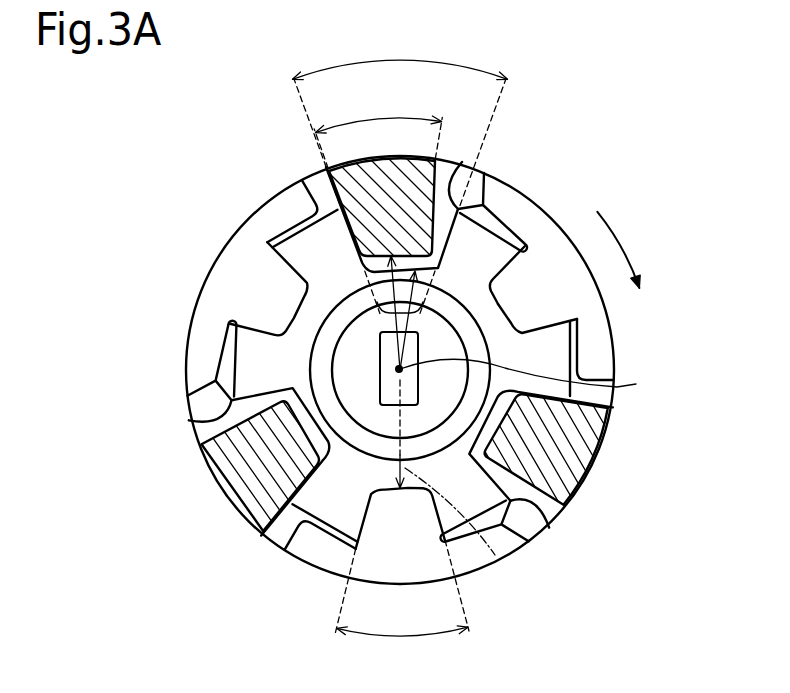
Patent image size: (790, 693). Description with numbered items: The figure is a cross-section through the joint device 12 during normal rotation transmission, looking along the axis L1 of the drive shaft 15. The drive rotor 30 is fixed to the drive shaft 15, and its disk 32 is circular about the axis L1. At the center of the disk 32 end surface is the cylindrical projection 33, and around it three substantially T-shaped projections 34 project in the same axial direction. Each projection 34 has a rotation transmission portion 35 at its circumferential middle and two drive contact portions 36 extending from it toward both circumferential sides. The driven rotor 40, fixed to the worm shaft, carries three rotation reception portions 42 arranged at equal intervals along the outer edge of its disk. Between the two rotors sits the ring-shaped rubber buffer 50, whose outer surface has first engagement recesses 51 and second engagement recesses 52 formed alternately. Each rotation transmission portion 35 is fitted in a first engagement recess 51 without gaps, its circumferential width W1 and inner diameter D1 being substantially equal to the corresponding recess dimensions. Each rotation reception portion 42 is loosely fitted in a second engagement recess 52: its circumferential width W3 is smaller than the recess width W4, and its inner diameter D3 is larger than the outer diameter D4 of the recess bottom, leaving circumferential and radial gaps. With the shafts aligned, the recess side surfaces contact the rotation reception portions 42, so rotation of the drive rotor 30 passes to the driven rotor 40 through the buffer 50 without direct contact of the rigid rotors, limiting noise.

The joint device 12 is at (572, 86).
The drive shaft 15 is at (382, 353).
The drive rotor 30 is at (483, 568).
The disk 32 is at (188, 393).
The cylindrical projection 33 is at (355, 448).
The projection 34 is at (205, 277).
The rotation transmission portion 35 is at (522, 318).
The drive contact portion 36 is at (520, 198).
The driven rotor 40 is at (612, 436).
The rotation reception portion 42 is at (343, 182).
The buffer 50 is at (237, 350).
The first engagement recess 51 is at (521, 252).
The second engagement recess 52 is at (371, 333).
The circumferential width of second engagement recess W4 is at (400, 59).
The circumferential width of rotation reception portion W3 is at (386, 117).
The circumferential width of rotation transmission portion W1 is at (394, 640).
The inner diameter of rotation reception portion D3 is at (371, 283).
The outer diameter of bottom surface of second engagement recess D4 is at (430, 288).
The inner diameter of rotation transmission portion D1 is at (495, 548).
The axis of drive shaft L1 is at (560, 381).